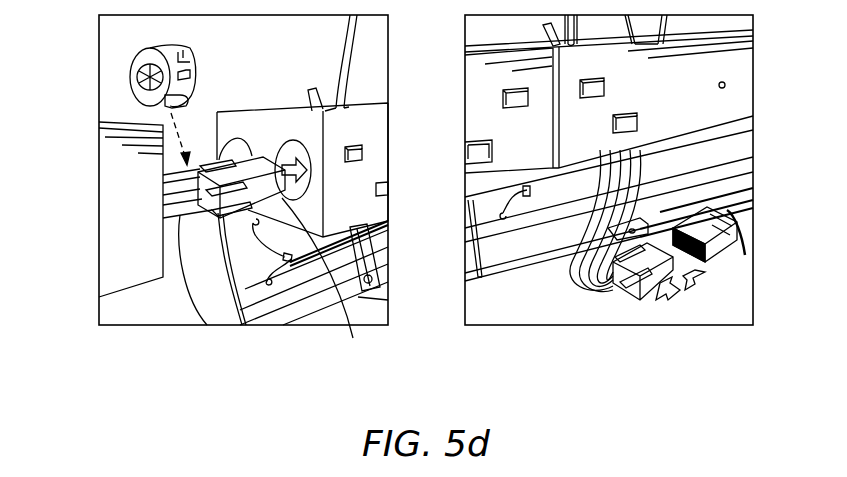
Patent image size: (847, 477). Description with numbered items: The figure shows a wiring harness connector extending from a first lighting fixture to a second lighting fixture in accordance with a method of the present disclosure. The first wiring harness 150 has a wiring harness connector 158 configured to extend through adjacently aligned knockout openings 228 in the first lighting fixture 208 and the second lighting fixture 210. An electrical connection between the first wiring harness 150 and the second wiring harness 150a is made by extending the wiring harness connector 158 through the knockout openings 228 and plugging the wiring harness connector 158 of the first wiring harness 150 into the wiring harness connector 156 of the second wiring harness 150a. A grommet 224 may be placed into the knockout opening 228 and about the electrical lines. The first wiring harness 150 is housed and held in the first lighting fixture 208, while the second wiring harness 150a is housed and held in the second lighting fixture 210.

The first wiring harness 150 is at (585, 255).
The second wiring harness 150a is at (745, 200).
The wiring harness connector 156 is at (728, 245).
The wiring harness connector 158 is at (240, 160).
The first lighting fixture 208 is at (108, 164).
The second lighting fixture 210 is at (295, 124).
The grommet 224 is at (132, 72).
The knockout opening 228 is at (327, 279).